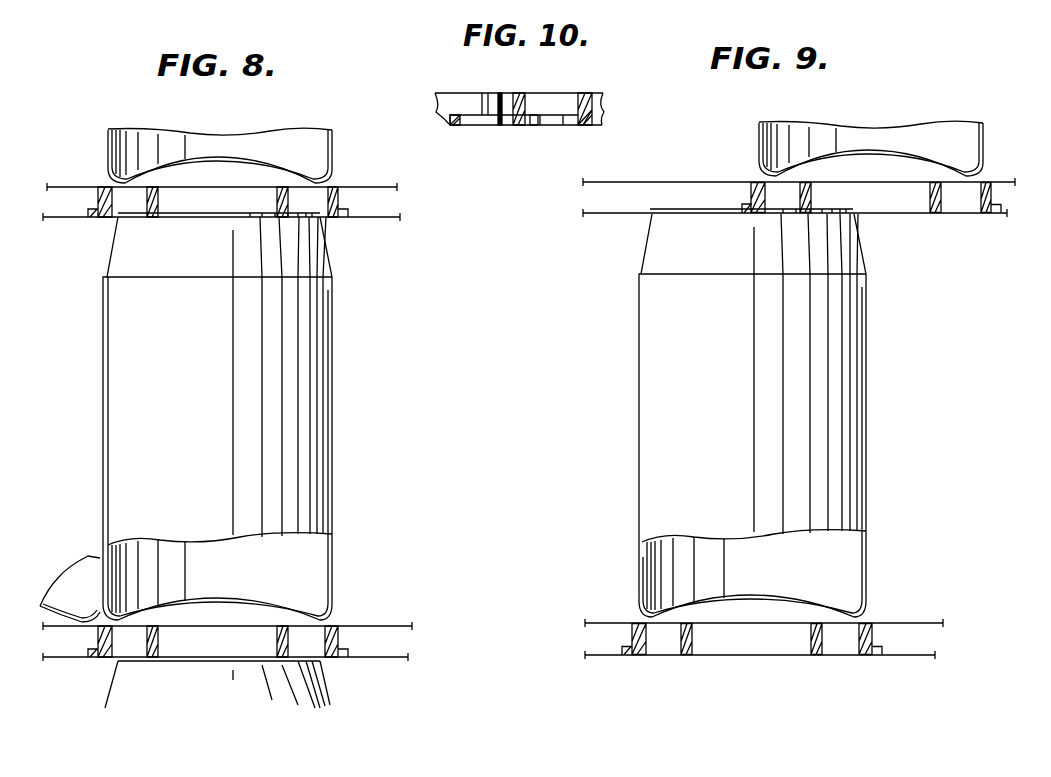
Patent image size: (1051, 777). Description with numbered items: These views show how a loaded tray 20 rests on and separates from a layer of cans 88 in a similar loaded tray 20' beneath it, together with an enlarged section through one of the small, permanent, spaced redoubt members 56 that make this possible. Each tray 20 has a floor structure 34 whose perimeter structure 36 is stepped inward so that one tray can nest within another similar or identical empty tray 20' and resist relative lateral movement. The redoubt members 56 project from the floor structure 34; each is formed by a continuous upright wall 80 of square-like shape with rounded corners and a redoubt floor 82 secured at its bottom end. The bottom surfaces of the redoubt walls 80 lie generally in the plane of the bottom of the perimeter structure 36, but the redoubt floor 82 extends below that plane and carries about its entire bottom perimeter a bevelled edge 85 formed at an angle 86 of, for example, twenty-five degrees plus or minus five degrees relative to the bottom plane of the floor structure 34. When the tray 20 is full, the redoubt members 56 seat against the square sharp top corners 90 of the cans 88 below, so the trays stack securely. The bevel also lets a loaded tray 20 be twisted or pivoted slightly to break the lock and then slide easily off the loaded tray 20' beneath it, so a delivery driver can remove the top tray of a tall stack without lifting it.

In FIG. 8, the cans 88 is at (307, 158).
In FIG. 9, the cans 88 is at (960, 150).
In FIG. 8, the tray 20 is at (249, 214).
In FIG. 9, the tray 20 is at (814, 182).
In FIG. 8, the similar or identical empty tray 20' is at (263, 665).
In FIG. 9, the similar or identical empty tray 20' is at (780, 626).
In FIG. 8, the floor structure 34 is at (80, 201).
In FIG. 9, the floor structure 34 is at (746, 192).
In FIG. 8, the redoubt members 56 is at (333, 215).
In FIG. 9, the redoubt members 56 is at (990, 214).
In FIG. 10, the redoubt members 56 is at (498, 138).
In FIG. 8, the square sharp top corners 90 is at (137, 218).
In FIG. 9, the square sharp top corners 90 is at (680, 218).
In FIG. 10, the upright wall 80 is at (456, 100).
In FIG. 10, the perimeter structure 36 is at (605, 106).
In FIG. 10, the redoubt floor 82 is at (467, 127).
In FIG. 10, the bevelled edge 85 is at (586, 128).
In FIG. 10, the angle 86 is at (533, 131).